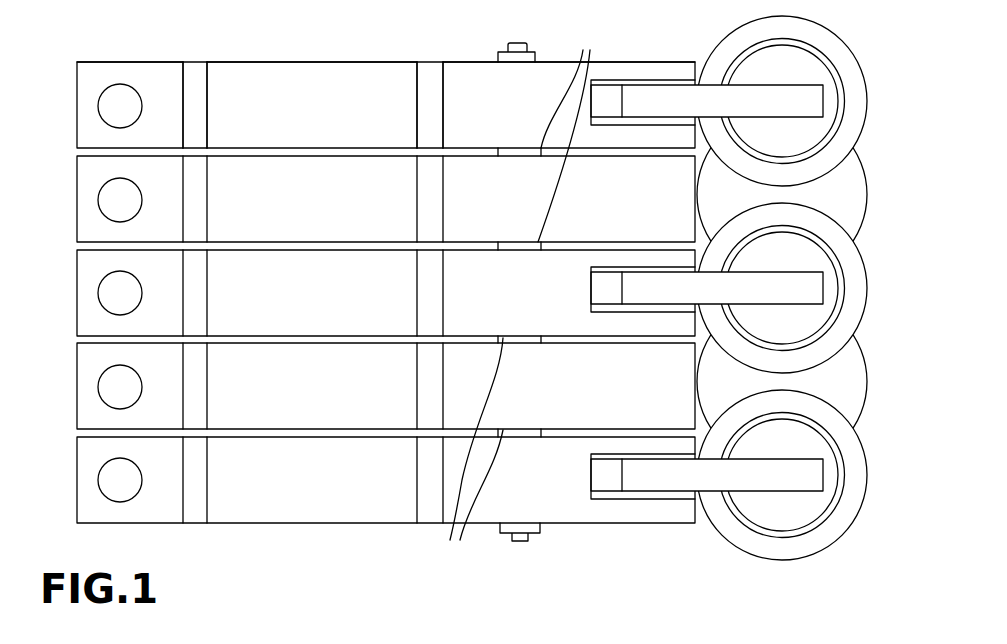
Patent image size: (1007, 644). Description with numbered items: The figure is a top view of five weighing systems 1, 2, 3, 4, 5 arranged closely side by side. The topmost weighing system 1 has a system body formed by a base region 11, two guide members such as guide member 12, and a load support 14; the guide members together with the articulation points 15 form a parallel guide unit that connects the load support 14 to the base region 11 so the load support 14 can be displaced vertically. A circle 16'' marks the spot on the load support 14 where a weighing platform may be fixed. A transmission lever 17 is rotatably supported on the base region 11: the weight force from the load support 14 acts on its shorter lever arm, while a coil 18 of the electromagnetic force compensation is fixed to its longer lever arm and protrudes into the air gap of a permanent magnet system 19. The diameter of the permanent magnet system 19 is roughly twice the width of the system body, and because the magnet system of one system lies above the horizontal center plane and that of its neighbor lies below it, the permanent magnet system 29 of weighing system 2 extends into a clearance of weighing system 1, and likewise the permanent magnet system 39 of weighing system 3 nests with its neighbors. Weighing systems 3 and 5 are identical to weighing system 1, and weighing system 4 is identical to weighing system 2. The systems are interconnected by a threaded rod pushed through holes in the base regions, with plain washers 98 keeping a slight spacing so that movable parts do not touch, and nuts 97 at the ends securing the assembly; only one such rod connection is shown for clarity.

The weighing system 1 is at (55, 103).
The weighing system 2 is at (57, 202).
The weighing system 3 is at (61, 295).
The weighing system 4 is at (62, 386).
The weighing system 5 is at (66, 477).
The base region 11 is at (545, 93).
The guide member 12 is at (336, 75).
The load support 14 is at (150, 72).
The articulation points 15 is at (200, 69).
The circle 16'' is at (85, 85).
The transmission lever 17 is at (645, 95).
The coil 18 is at (745, 72).
The permanent magnet system 19 is at (845, 62).
The permanent magnet system 29 is at (855, 178).
The permanent magnet system 39 is at (850, 265).
The nuts 97 is at (500, 53).
The plain washers 98 is at (524, 299).